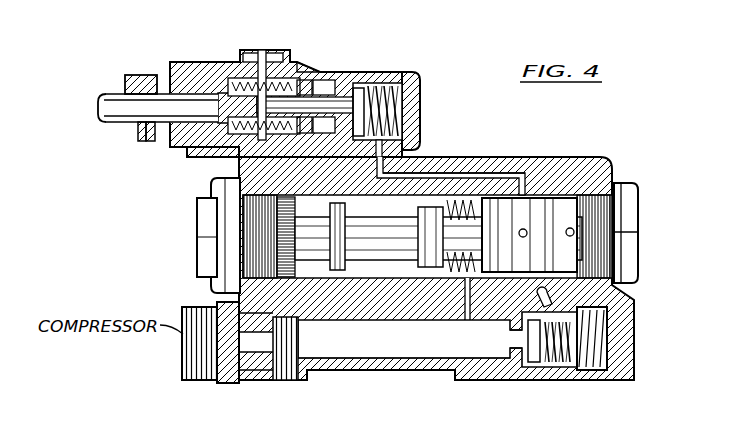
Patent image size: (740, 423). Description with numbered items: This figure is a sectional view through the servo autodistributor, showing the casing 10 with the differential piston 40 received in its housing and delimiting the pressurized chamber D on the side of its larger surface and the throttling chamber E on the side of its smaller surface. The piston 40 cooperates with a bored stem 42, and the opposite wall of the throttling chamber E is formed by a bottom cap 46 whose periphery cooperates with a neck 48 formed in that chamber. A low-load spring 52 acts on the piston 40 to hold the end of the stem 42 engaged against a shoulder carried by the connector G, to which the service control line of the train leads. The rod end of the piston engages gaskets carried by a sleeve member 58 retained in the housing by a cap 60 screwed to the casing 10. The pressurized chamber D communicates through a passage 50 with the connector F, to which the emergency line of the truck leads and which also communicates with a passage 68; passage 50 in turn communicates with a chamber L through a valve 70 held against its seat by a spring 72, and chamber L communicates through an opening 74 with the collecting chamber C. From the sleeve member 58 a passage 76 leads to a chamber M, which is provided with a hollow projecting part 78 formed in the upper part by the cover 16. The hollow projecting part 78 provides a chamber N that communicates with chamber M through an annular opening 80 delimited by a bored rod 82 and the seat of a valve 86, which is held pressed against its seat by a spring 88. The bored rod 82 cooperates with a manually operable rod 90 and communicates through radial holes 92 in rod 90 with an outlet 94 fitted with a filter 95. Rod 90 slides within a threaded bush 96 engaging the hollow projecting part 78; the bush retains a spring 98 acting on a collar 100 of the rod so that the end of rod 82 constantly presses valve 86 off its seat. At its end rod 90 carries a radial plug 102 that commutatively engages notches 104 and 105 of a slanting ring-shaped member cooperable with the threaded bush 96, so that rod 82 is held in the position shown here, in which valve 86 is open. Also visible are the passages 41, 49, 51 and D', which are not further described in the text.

The casing 10 is at (578, 164).
The cover 16 is at (410, 148).
The piston 40 is at (454, 160).
The passage 41 is at (437, 382).
The bored stem 42 is at (363, 228).
The bottom cap 46 is at (337, 272).
The neck 48 is at (367, 272).
The inlet passage 49 is at (320, 382).
The passage 50 is at (469, 300).
The passage 51 is at (487, 422).
The low-load spring 52 is at (488, 166).
The sleeve member 58 is at (541, 196).
The cap 60 is at (630, 202).
The passage 68 is at (377, 352).
The valve 70 is at (532, 358).
The spring 72 is at (584, 360).
The opening 74 is at (557, 297).
The passage 76 is at (513, 175).
The hollow projecting part 78 is at (362, 74).
The annular opening 80 is at (368, 92).
The bored rod 82 is at (316, 78).
The valve 86 is at (416, 80).
The spring 88 is at (400, 106).
The rod 90 is at (106, 122).
The holes 92 is at (220, 158).
The outlet 94 is at (272, 54).
The filter 95 is at (259, 52).
The threaded bush 96 is at (162, 75).
The spring 98 is at (222, 70).
The collar 100 is at (303, 60).
The radial plug 102 is at (139, 141).
The notch 104 is at (152, 141).
The notch 105 is at (135, 76).
The connector G is at (204, 236).
The connector F is at (190, 350).
The chamber N is at (340, 82).
The chamber M is at (384, 70).
The throttling chamber E is at (393, 272).
The pressurized chamber D is at (437, 279).
The passage D' is at (404, 389).
The collecting chamber C is at (347, 382).
The chamber L is at (561, 360).